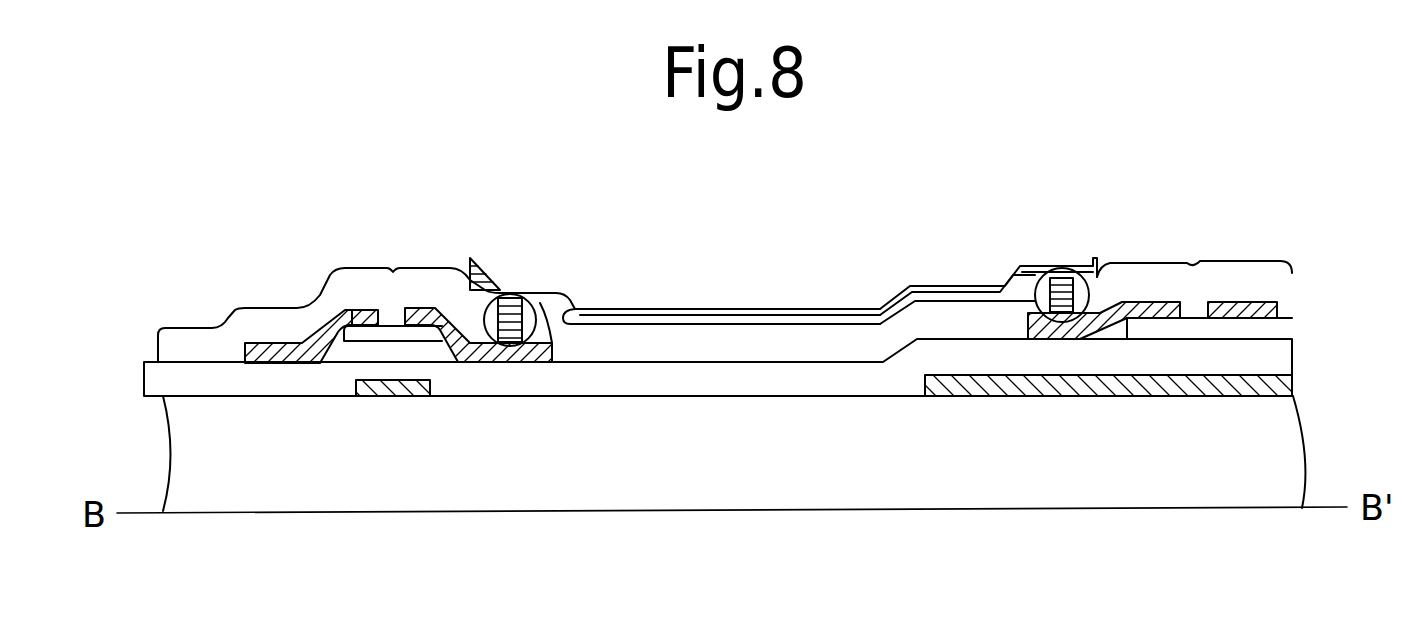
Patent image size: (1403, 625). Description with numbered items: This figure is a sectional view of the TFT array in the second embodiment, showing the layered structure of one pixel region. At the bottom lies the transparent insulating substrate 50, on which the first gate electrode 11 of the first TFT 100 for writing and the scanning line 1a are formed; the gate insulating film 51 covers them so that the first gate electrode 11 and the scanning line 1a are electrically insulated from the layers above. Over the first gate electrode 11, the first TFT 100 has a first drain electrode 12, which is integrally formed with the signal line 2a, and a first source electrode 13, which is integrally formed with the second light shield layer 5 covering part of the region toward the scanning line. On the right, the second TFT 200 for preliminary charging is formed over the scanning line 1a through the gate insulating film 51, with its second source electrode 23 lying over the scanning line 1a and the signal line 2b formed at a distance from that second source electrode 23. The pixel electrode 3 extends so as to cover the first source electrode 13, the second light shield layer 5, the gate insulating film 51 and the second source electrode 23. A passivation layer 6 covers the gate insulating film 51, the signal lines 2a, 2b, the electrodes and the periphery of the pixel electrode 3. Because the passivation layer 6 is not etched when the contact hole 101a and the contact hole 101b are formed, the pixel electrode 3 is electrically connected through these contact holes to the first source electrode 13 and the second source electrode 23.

The transparent insulating substrate 50 is at (750, 493).
The gate insulating film 51 is at (180, 377).
The first gate electrode 11 is at (400, 388).
The scanning line 1a is at (1110, 388).
The passivation layer 6 is at (230, 335).
The signal line 2a is at (293, 350).
The first drain electrode 12 is at (353, 307).
The first TFT 100 is at (397, 328).
The first source electrode 13 is at (432, 308).
The contact hole 101a is at (510, 296).
The second light shield layer 5 is at (540, 338).
The pixel electrode 3 is at (682, 309).
The contact hole 101b is at (1058, 272).
The second source electrode 23 is at (1145, 310).
The second TFT 200 is at (1195, 330).
The signal line 2b is at (1240, 302).